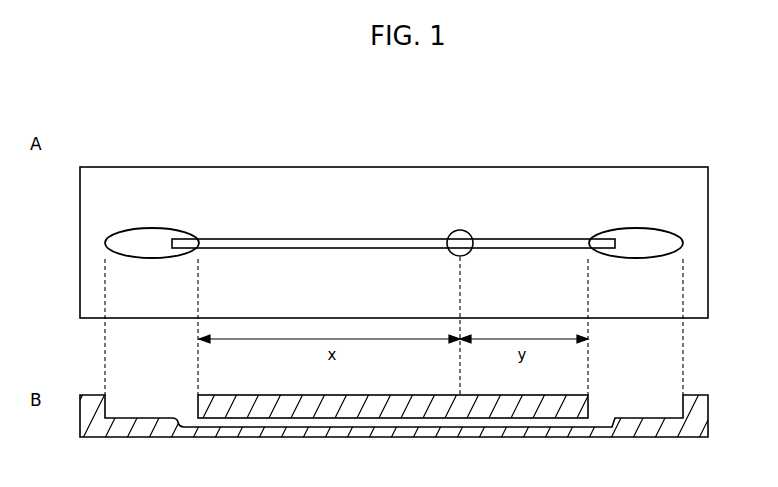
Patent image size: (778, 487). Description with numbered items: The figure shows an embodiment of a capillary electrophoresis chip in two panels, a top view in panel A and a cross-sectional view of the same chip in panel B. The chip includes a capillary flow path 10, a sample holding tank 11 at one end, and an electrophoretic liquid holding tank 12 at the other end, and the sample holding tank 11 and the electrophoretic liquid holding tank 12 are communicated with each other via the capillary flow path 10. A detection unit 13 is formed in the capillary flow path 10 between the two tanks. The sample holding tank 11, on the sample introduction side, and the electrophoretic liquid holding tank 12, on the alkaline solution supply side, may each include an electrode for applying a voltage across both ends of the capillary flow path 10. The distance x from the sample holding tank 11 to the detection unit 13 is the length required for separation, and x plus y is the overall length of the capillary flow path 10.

The capillary flow path 10 is at (306, 239).
The sample holding tank 11 is at (153, 228).
The electrophoretic liquid holding tank 12 is at (635, 228).
The detection unit 13 is at (460, 230).